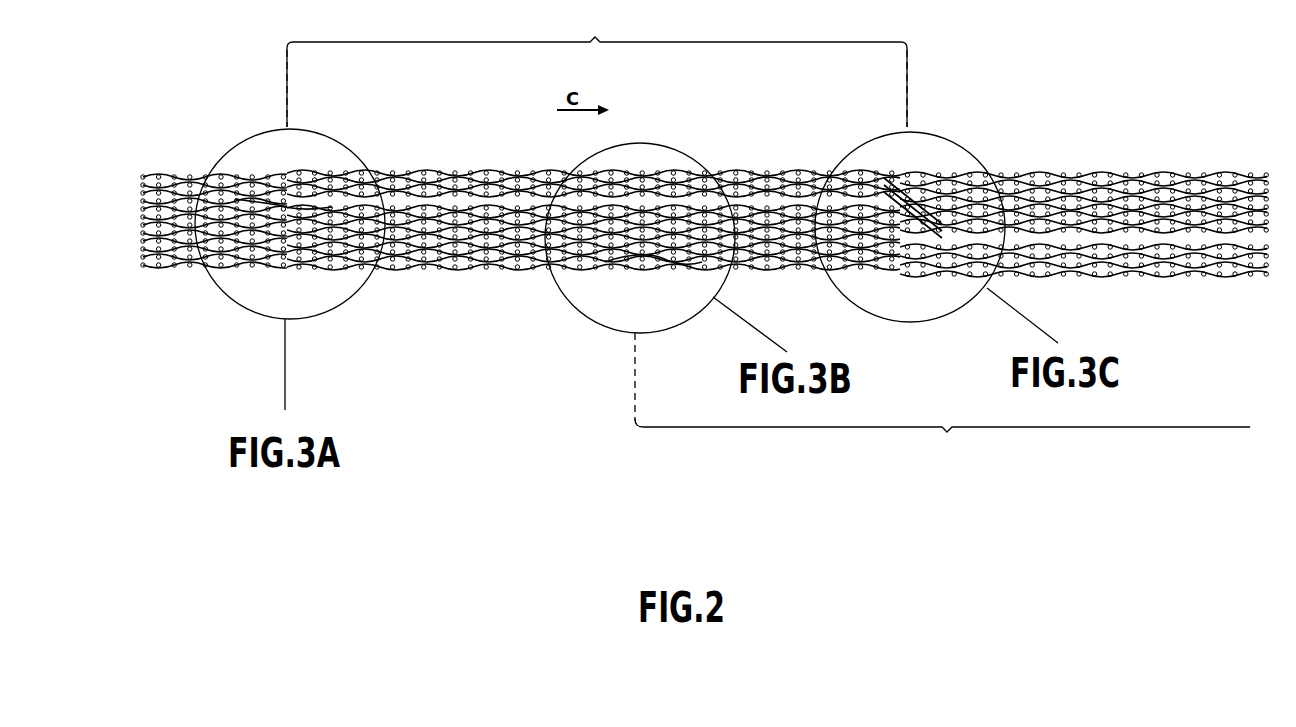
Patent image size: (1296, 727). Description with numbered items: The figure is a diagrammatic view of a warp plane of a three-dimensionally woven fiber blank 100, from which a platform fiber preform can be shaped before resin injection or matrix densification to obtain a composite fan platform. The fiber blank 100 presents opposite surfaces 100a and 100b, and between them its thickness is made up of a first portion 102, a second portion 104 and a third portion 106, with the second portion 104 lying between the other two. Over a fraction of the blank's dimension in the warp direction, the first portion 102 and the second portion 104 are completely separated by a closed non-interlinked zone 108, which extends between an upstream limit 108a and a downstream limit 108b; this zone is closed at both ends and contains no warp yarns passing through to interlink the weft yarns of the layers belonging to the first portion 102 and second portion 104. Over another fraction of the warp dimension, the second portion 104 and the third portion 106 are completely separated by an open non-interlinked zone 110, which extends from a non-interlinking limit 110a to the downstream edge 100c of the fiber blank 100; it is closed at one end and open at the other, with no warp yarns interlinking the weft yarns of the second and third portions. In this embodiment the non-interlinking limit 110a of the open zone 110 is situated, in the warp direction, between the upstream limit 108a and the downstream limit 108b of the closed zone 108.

The fiber blank 100 is at (1076, 85).
The surface 100a is at (468, 160).
The surface 100b is at (461, 280).
The downstream edge 100c is at (1273, 206).
The first portion 102 is at (141, 175).
The second portion 104 is at (141, 206).
The third portion 106 is at (141, 236).
The closed non-interlinked zone 108 is at (597, 69).
The upstream limit 108a is at (277, 205).
The downstream limit 108b is at (882, 200).
The open non-interlinked zone 110 is at (942, 395).
The non-interlinking limit 110a is at (641, 238).